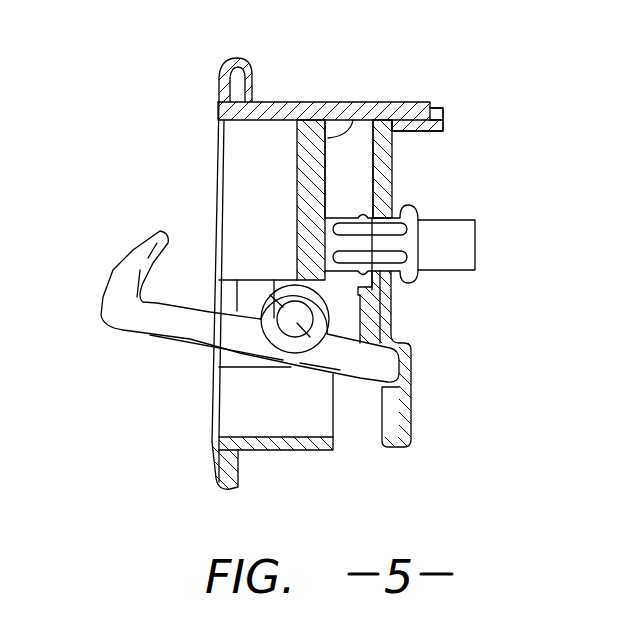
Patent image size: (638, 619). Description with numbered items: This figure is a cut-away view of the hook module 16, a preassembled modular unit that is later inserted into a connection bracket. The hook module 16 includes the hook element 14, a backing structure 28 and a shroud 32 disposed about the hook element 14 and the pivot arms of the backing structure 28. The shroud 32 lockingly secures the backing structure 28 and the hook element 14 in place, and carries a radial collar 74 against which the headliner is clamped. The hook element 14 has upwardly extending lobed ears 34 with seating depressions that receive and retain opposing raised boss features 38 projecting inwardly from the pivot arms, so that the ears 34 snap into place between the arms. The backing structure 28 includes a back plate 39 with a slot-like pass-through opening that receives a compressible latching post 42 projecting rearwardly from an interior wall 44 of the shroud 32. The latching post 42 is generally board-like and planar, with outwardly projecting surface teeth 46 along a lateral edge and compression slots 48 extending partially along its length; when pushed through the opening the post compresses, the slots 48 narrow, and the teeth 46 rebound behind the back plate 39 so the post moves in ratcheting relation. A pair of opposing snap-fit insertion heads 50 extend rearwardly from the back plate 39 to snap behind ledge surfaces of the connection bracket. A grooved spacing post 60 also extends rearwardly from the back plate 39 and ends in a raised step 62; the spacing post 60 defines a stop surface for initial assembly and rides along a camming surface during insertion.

The hook element 14 is at (101, 316).
The hook module 16 is at (394, 93).
The backing structure 28 is at (393, 177).
The shroud 32 is at (274, 103).
The lobed ears 34 is at (323, 310).
The raised boss features 38 is at (298, 323).
The back plate 39 is at (394, 153).
The latching post 42 is at (344, 212).
The interior wall 44 is at (352, 118).
The surface teeth 46 is at (407, 205).
The compression slots 48 is at (395, 237).
The snap-fit insertion heads 50 is at (477, 240).
The grooved spacing post 60 is at (445, 121).
The raised step 62 is at (438, 104).
The radial collar 74 is at (221, 63).